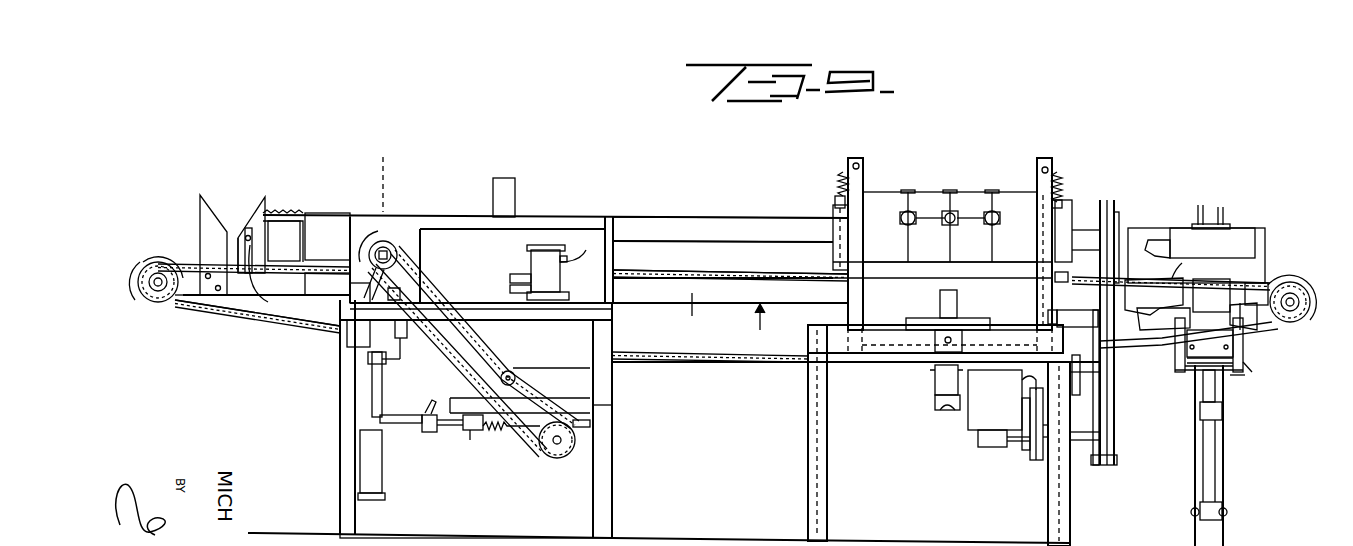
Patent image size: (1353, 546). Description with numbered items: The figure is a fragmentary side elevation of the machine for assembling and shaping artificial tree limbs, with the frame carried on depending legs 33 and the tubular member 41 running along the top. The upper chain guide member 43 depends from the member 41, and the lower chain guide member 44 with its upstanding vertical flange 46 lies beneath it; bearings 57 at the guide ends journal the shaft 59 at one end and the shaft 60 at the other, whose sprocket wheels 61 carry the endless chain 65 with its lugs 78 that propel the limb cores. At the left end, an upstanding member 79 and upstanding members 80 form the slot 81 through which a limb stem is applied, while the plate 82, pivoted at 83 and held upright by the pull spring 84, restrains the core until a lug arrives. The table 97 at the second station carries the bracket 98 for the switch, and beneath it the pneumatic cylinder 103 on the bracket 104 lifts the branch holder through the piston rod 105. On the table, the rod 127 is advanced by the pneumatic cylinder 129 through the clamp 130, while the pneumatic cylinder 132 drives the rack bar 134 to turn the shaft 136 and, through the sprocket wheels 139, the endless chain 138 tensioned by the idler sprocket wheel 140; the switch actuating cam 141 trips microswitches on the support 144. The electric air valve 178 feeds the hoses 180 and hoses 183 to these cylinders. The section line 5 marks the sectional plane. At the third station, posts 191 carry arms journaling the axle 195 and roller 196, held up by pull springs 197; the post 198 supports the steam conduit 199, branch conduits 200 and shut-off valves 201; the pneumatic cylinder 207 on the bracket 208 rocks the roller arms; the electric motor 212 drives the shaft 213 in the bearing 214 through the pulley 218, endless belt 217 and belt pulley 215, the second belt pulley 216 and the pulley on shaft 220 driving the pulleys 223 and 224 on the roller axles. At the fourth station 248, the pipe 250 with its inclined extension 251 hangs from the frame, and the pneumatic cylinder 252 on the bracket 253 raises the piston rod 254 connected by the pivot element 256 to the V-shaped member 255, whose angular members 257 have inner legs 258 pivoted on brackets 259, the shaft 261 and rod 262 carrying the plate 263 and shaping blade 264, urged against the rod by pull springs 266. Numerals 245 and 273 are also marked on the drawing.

The section line 5 is at (381, 174).
The depending legs 33 is at (347, 492).
The tubular member 41 is at (755, 232).
The upper chain guide member 43 is at (705, 250).
The lower chain guide member 44 is at (753, 326).
The upstanding vertical flange 46 is at (686, 313).
The bearings 57 is at (186, 304).
The shaft 59 is at (139, 284).
The shaft 60 is at (1296, 311).
The sprocket wheels 61 is at (165, 298).
The endless chain 65 is at (640, 268).
The lugs 78 is at (160, 260).
The upstanding member 79 is at (206, 238).
The upstanding members 80 is at (268, 205).
The slot 81 is at (233, 242).
The plate 82 is at (253, 268).
The pivot 83 is at (267, 279).
The pull spring 84 is at (294, 217).
The table 97 is at (612, 410).
The bracket 98 is at (516, 195).
The pneumatic cylinder 103 is at (386, 470).
The bracket 104 is at (386, 496).
The piston rod 105 is at (384, 386).
The rod 127 is at (393, 253).
The pneumatic cylinder 129 is at (352, 292).
The clamp 130 is at (360, 270).
The pneumatic cylinder 132 is at (406, 417).
The rack bar 134 is at (500, 436).
The shaft 136 is at (552, 445).
The endless chain 138 is at (483, 360).
The sprocket wheels 139 is at (408, 272).
The idler sprocket wheel 140 is at (516, 376).
The switch actuating cam 141 is at (466, 435).
The support 144 is at (600, 404).
The electric air valve 178 is at (528, 249).
The hoses 180 is at (512, 290).
The hoses 183 is at (512, 276).
The posts 191 is at (864, 172).
The axle 195 is at (1075, 228).
The roller 196 is at (1021, 190).
The pull springs 197 is at (842, 180).
The post 198 is at (940, 292).
The steam conduit 199 is at (948, 225).
The branch conduits 200 is at (925, 213).
The shut-off valve 201 is at (958, 211).
The pneumatic cylinder 207 is at (938, 405).
The bracket 208 is at (935, 380).
The electric motor 212 is at (978, 412).
The shaft 213 is at (1016, 443).
The bearing 214 is at (990, 442).
The belt pulley 215 is at (1032, 462).
The belt pulley 216 is at (1109, 458).
The endless belt 217 is at (1028, 412).
The pulley 218 is at (1025, 379).
The shaft 220 is at (1109, 390).
The pulley 223 is at (1076, 330).
The pulley 224 is at (1114, 210).
The top plate 245 is at (1233, 226).
The fourth station 248 is at (1222, 210).
The pipe 250 is at (1232, 249).
The upwardly inclined extension 251 is at (1155, 238).
The pneumatic cylinder 252 is at (1206, 436).
The bracket 253 is at (1195, 518).
The piston rod 254 is at (1208, 392).
The V-shaped member 255 is at (1188, 376).
The pivot element 256 is at (1234, 374).
The angular members 257 is at (1174, 363).
The inner legs 258 is at (1250, 290).
The brackets 259 is at (1236, 292).
The shaft 261 is at (1246, 336).
The rod 262 is at (1180, 316).
The plate 263 is at (1210, 343).
The shaping blade 264 is at (1182, 272).
The pull springs 266 is at (1244, 369).
The pin 273 is at (1201, 203).